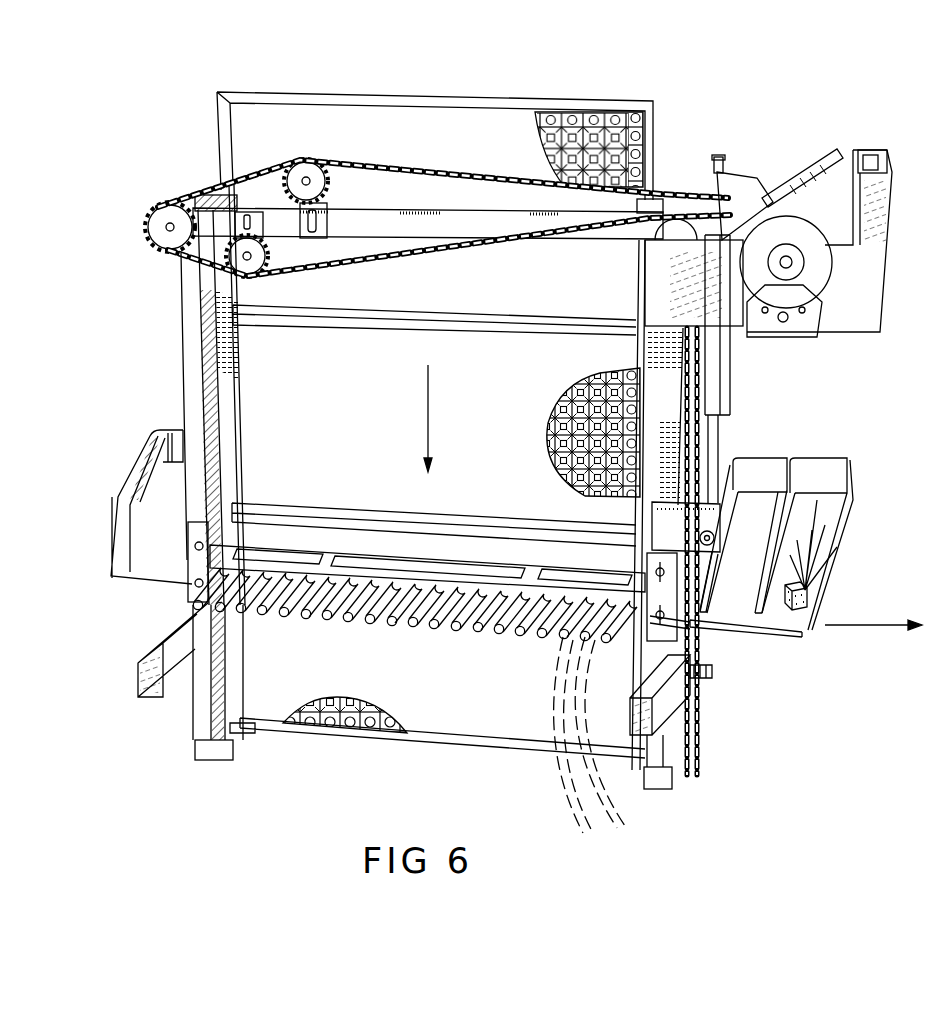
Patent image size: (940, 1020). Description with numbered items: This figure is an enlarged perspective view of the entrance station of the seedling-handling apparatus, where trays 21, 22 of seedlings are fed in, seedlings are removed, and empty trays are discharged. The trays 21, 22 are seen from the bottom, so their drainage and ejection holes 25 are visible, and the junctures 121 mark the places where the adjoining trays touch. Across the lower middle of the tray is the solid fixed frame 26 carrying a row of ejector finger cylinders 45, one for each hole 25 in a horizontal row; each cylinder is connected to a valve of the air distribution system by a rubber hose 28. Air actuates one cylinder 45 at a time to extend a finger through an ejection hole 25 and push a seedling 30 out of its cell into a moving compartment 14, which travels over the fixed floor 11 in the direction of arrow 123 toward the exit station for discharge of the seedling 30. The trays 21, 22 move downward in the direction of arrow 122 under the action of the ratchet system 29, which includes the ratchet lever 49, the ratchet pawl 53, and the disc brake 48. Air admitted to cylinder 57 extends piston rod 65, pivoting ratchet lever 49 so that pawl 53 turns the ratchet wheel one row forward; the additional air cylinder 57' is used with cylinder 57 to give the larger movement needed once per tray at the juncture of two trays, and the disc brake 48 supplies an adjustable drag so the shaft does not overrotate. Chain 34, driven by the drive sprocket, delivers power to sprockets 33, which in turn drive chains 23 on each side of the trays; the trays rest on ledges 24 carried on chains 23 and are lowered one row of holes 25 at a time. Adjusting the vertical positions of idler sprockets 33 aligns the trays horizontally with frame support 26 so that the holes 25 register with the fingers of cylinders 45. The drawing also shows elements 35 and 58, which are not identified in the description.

The floor 11 is at (774, 629).
The moving compartments 14 is at (833, 522).
The tray 21 is at (241, 367).
The tray 22 is at (333, 97).
The chains 23 is at (189, 404).
The ledges 24 is at (710, 673).
The ejection holes 25 is at (561, 451).
The fixed frame 26 is at (689, 629).
The rubber hose 28 is at (577, 797).
The ratchet system 29 is at (884, 136).
The seedlings 30 is at (818, 590).
The idler sprockets 33 is at (158, 221).
The chain 34 is at (439, 174).
The idler gears 35 is at (301, 170).
The ejector finger cylinders 45 is at (389, 619).
The disc brake 48 is at (818, 274).
The ratchet lever 49 is at (737, 186).
The ratchet pawl 53 is at (812, 181).
The air cylinder 57 is at (738, 328).
The air cylinder 57' is at (741, 459).
The link 58 is at (714, 560).
The piston rod 65 is at (721, 537).
The junctures 121 is at (251, 311).
The arrow 122 is at (428, 412).
The arrow 123 is at (845, 628).